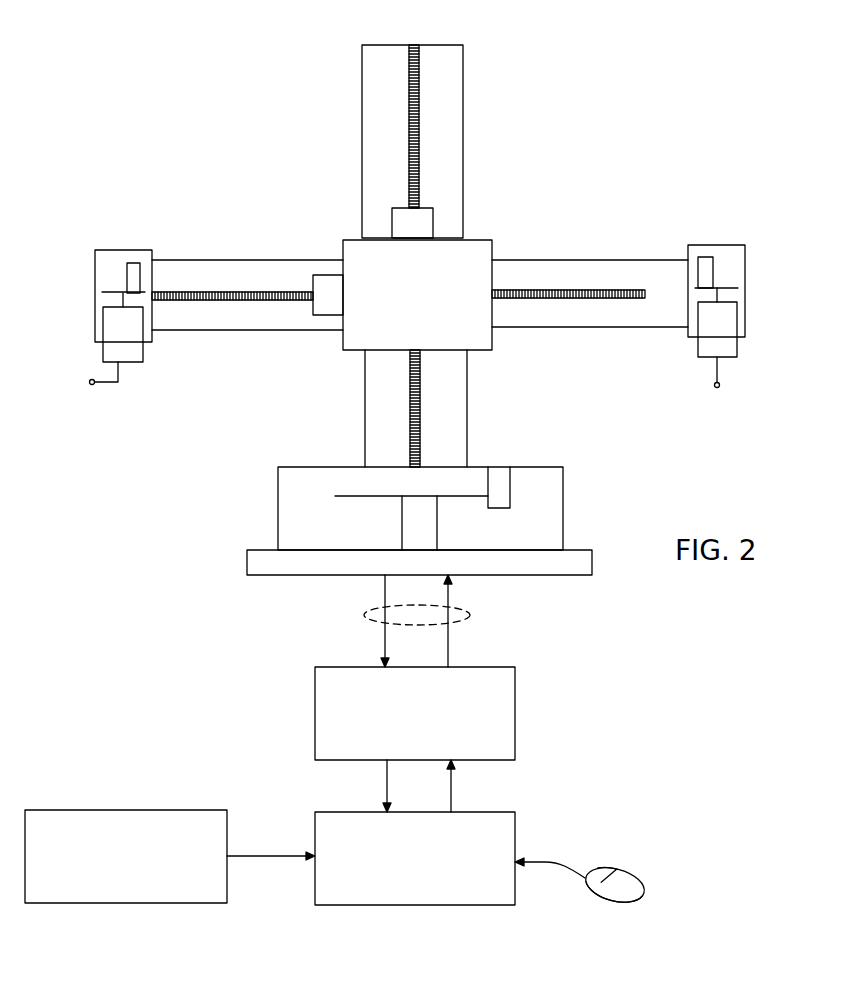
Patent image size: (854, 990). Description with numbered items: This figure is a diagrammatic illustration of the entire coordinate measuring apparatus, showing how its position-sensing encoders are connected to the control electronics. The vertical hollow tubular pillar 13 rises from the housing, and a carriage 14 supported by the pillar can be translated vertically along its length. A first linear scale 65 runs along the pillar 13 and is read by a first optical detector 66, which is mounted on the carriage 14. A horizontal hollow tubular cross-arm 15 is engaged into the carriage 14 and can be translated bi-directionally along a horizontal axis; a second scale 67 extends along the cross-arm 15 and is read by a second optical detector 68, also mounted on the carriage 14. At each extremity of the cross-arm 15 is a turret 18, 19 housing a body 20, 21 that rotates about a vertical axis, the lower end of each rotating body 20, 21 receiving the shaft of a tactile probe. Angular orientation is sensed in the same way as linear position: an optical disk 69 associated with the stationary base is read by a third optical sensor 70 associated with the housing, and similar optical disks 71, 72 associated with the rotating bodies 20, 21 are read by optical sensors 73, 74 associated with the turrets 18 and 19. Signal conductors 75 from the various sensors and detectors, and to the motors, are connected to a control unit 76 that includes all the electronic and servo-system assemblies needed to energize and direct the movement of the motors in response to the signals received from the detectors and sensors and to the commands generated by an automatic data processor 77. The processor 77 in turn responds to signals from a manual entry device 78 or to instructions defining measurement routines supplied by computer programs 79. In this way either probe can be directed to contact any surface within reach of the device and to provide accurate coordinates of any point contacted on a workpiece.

The hollow tubular pillar 13 is at (463, 124).
The carriage 14 is at (492, 240).
The horizontal hollow tubular cross-arm 15 is at (600, 260).
The turret 18 is at (152, 251).
The turret 19 is at (745, 249).
The rotating body 20 is at (143, 355).
The rotating body 21 is at (737, 350).
The first linear scale 65 is at (409, 118).
The first optical detector 66 is at (392, 228).
The second scale 67 is at (577, 300).
The second optical detector 68 is at (313, 280).
The optical disk 69 is at (370, 497).
The third optical sensor 70 is at (510, 480).
The optical disk 71 is at (108, 292).
The optical disk 72 is at (738, 286).
The optical sensor 73 is at (133, 263).
The optical sensor 74 is at (705, 257).
The signal conductors 75 is at (471, 610).
The control unit 76 is at (515, 712).
The automatic data processor 77 is at (515, 823).
The manual entry device 78 is at (628, 880).
The computer programs 79 is at (227, 824).